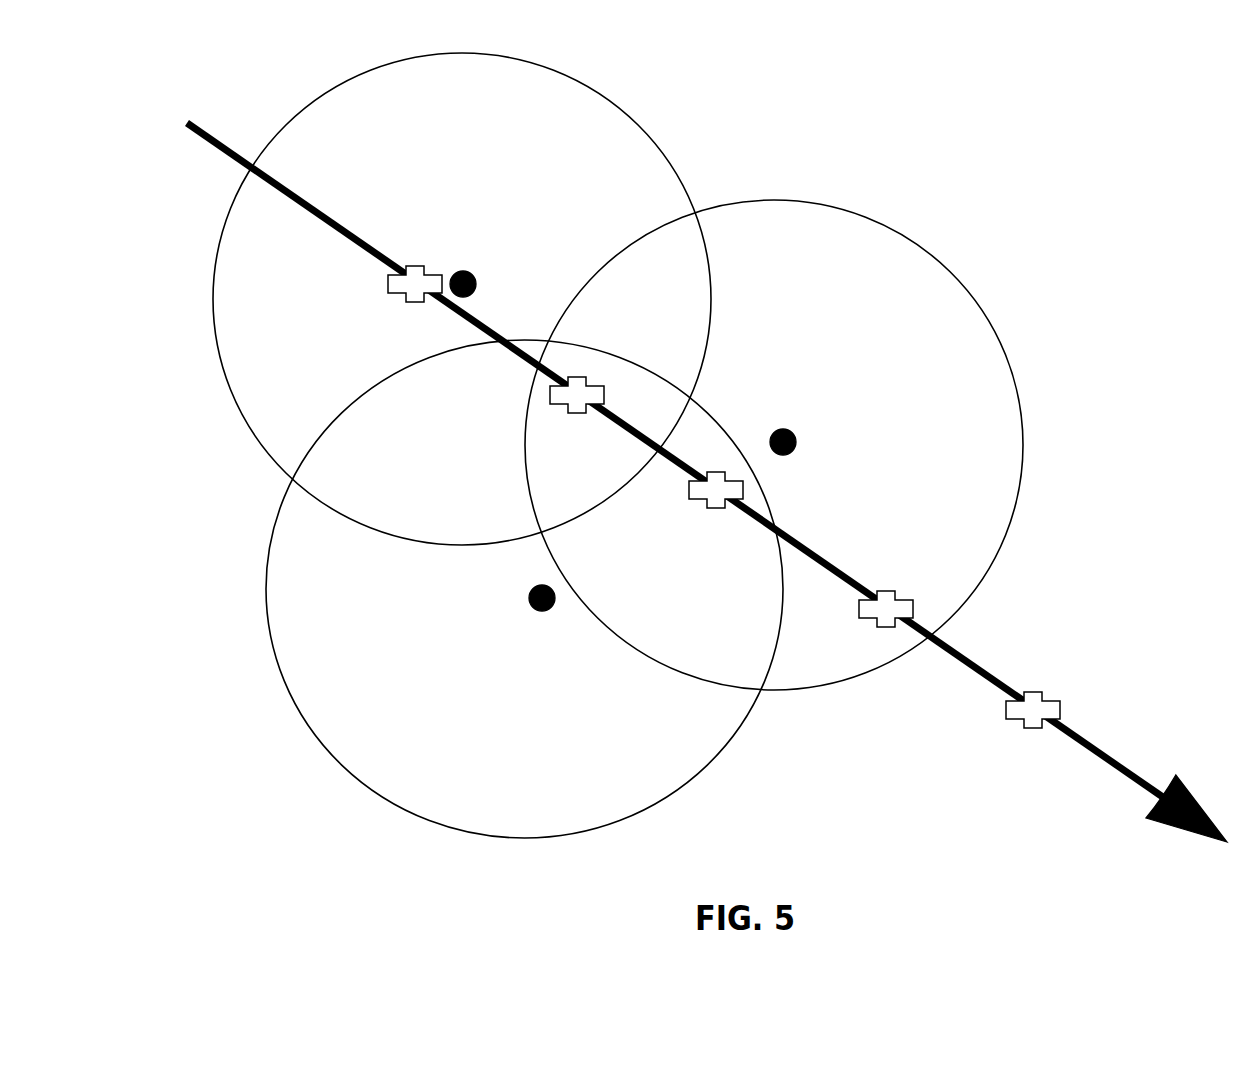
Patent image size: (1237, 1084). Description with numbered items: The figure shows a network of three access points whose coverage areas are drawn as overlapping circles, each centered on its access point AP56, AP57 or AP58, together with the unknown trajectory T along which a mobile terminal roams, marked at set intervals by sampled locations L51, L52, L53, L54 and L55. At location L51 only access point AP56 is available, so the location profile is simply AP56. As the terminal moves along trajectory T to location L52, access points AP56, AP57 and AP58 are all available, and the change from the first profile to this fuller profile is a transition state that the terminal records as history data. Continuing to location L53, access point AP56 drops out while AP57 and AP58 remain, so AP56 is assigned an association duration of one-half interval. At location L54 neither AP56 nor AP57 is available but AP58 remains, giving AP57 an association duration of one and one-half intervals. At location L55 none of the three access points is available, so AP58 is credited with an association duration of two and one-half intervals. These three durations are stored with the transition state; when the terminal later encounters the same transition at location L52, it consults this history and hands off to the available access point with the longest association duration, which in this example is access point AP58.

The trajectory T is at (707, 482).
The location L51 is at (405, 303).
The location L52 is at (577, 413).
The location L53 is at (713, 506).
The location L54 is at (894, 588).
The location L55 is at (1040, 691).
The access point AP56 is at (490, 263).
The access point AP57 is at (545, 621).
The access point AP58 is at (807, 422).